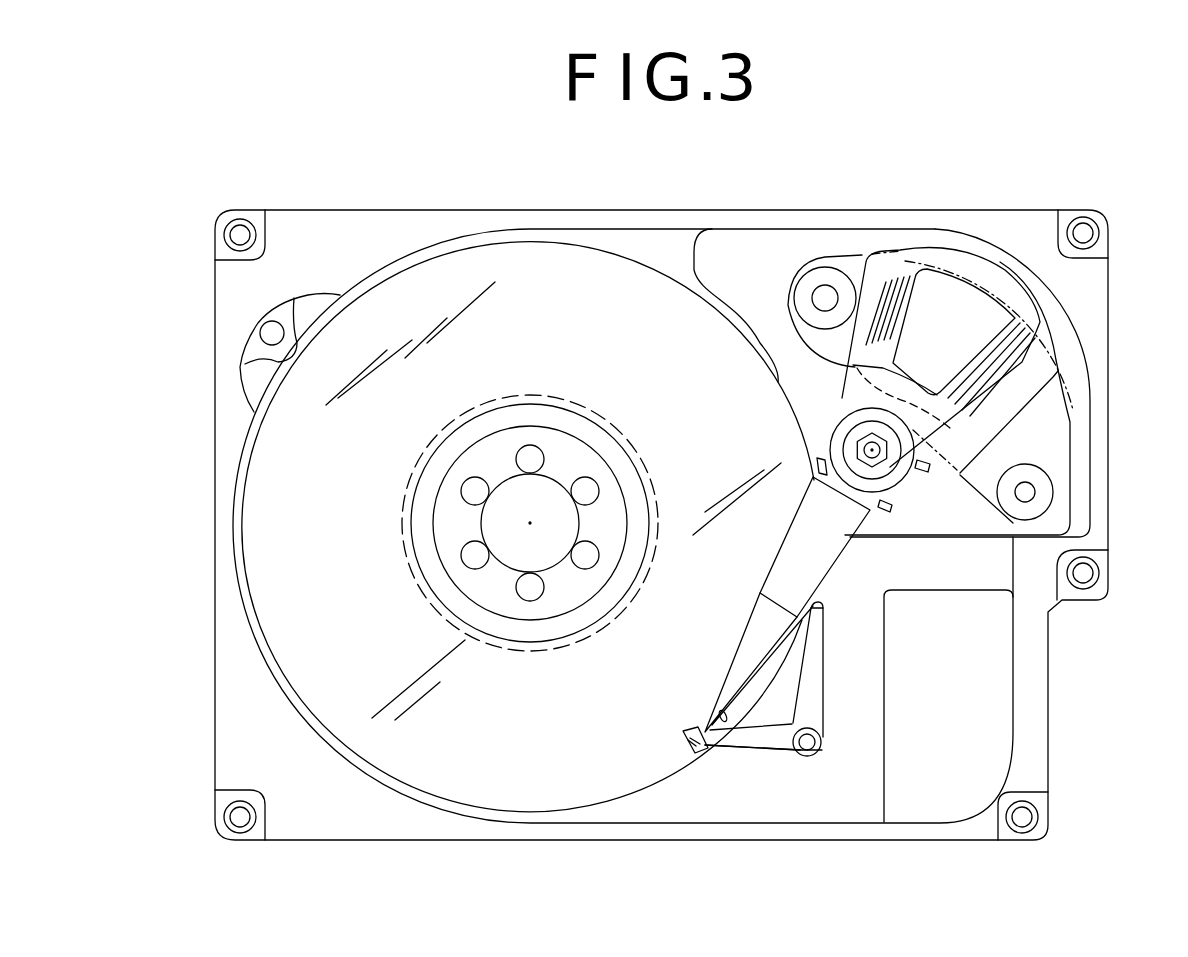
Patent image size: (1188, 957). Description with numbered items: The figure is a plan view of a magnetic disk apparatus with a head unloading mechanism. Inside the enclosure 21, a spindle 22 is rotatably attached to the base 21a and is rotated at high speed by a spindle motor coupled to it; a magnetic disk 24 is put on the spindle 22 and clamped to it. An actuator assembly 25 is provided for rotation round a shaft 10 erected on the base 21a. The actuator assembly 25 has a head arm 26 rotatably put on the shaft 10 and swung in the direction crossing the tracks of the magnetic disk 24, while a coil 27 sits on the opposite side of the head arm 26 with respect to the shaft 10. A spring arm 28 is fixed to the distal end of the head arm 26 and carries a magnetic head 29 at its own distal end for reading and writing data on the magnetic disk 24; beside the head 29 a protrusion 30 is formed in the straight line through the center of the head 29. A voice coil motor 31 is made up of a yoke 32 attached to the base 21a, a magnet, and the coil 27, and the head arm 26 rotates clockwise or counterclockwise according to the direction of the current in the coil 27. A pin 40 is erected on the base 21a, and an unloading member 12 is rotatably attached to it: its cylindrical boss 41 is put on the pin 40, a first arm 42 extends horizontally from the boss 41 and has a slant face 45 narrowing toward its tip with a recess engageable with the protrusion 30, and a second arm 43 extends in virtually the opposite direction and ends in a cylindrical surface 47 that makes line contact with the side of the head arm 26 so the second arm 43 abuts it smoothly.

The shaft 10 is at (847, 447).
The unloading member 12 is at (764, 766).
The enclosure 21 is at (322, 262).
The base 21a is at (756, 240).
The spindle 22 is at (490, 520).
The magnetic disk 24 is at (520, 252).
The actuator assembly 25 is at (884, 519).
The head arm 26 is at (782, 562).
The coil 27 is at (975, 258).
The spring arm 28 is at (747, 625).
The magnetic head 29 is at (708, 710).
The protrusion 30 is at (694, 731).
The voice coil motor 31 is at (1070, 384).
The yoke 32 is at (1060, 428).
The pin 40 is at (810, 755).
The cylindrical boss 41 is at (832, 745).
The first arm 42 is at (748, 746).
The second arm 43 is at (822, 680).
The slant face 45 is at (688, 742).
The cylindrical surface 47 is at (836, 610).